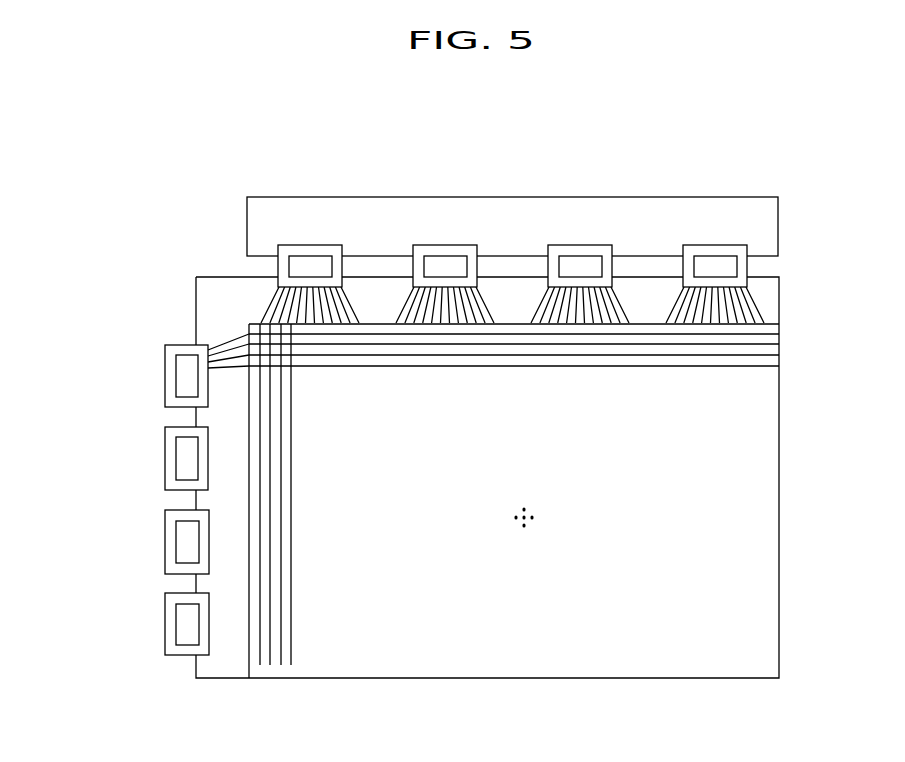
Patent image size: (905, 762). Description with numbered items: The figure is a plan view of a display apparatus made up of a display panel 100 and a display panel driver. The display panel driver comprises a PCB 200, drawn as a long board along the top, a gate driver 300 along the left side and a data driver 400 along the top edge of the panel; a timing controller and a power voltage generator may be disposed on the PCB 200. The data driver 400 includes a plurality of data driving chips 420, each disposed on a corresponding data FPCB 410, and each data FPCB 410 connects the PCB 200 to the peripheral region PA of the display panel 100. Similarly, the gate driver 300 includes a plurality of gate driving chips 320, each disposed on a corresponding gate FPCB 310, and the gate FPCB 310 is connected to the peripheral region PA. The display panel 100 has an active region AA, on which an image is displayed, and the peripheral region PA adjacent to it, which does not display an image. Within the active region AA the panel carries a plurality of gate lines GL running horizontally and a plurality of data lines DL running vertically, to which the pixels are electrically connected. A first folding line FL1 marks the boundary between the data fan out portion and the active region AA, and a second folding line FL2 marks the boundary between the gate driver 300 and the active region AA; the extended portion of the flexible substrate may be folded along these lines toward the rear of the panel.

The display panel 100 is at (779, 605).
The PCB 200 is at (779, 228).
The gate driver 300 is at (122, 500).
The gate FPCB 310 is at (165, 360).
The gate driving chip 320 is at (178, 388).
The data driver 400 is at (511, 199).
The data FPCB 410 is at (320, 246).
The data driving chip 420 is at (297, 257).
The peripheral region PA is at (768, 290).
The active region AA is at (768, 495).
The first folding line FL1 is at (779, 330).
The second folding line FL2 is at (250, 678).
The gate lines GL is at (395, 366).
The data lines DL is at (291, 495).